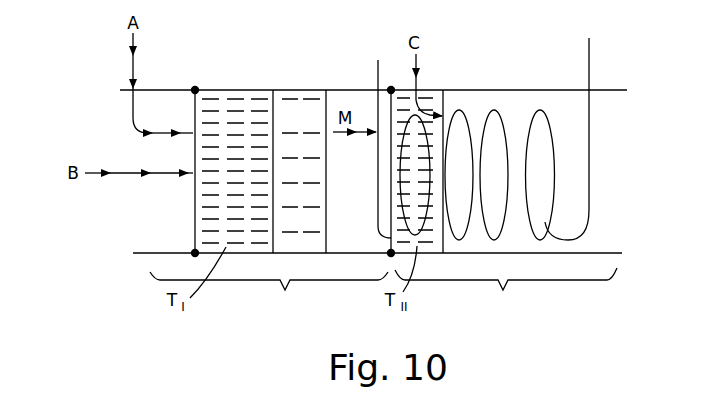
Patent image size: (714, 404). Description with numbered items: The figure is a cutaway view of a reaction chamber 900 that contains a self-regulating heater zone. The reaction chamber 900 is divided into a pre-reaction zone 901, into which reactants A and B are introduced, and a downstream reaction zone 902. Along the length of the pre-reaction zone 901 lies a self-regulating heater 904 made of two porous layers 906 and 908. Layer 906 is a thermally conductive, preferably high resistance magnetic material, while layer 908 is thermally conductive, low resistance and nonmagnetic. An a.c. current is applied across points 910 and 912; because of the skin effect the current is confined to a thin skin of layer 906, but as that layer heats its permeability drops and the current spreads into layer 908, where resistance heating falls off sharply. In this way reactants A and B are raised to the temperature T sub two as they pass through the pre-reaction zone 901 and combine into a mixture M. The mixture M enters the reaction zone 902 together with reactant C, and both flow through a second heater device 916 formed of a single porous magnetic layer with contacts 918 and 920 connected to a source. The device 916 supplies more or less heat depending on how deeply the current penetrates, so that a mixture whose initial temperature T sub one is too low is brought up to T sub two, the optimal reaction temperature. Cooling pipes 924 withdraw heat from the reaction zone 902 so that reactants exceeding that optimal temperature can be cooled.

The reaction chamber 900 is at (102, 231).
The pre-reaction zone 901 is at (269, 300).
The reaction zone 902 is at (506, 298).
The self-regulating heater 904 is at (276, 82).
The porous layer 906 is at (230, 89).
The porous layer 908 is at (296, 88).
The point 910 is at (195, 87).
The point 912 is at (194, 251).
The heater device 916 is at (436, 80).
The contact 918 is at (391, 87).
The contact 920 is at (390, 251).
The cooling pipes 924 is at (590, 55).